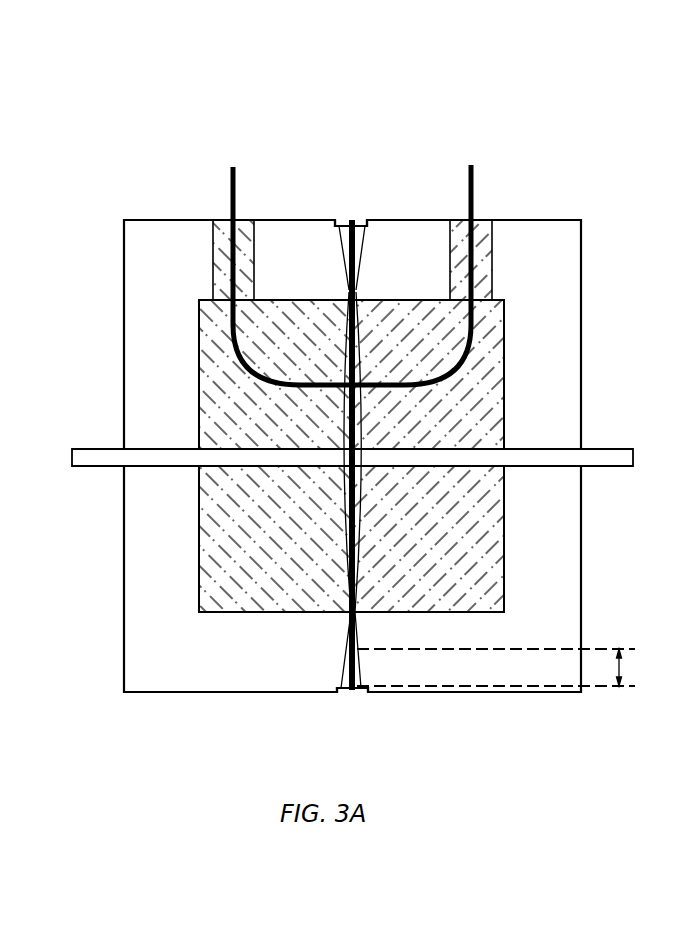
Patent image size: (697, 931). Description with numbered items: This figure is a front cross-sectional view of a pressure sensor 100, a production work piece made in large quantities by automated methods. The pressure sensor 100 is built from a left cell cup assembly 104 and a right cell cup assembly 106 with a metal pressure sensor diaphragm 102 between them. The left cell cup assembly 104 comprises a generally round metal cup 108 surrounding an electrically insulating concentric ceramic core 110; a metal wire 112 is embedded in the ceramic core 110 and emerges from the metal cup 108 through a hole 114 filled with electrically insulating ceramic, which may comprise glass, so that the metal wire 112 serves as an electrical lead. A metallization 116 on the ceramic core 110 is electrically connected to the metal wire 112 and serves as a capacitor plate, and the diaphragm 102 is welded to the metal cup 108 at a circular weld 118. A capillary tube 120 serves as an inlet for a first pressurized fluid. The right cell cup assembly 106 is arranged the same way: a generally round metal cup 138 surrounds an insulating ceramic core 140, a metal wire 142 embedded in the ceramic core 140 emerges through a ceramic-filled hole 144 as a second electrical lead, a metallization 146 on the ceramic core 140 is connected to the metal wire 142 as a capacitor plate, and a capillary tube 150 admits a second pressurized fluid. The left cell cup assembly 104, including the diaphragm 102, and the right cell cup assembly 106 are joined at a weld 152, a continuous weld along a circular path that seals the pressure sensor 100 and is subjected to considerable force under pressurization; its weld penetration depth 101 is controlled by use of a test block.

The pressure sensor 100 is at (478, 739).
The weld penetration depth 101 is at (619, 668).
The pressure sensor diaphragm 102 is at (348, 490).
The left cell cup assembly 104 is at (224, 122).
The right cell cup assembly 106 is at (415, 116).
The metal cup 108 is at (183, 220).
The ceramic core 110 is at (263, 519).
The metal wire 112 is at (231, 190).
The hole 114 is at (211, 264).
The metallization 116 is at (347, 425).
The circular weld 118 is at (347, 287).
The capillary tube 120 is at (92, 471).
The metal cup 138 is at (528, 218).
The ceramic core 140 is at (470, 513).
The metal wire 142 is at (474, 195).
The hole 144 is at (495, 264).
The metallization 146 is at (362, 422).
The capillary tube 150 is at (613, 467).
The weld 152 is at (365, 238).